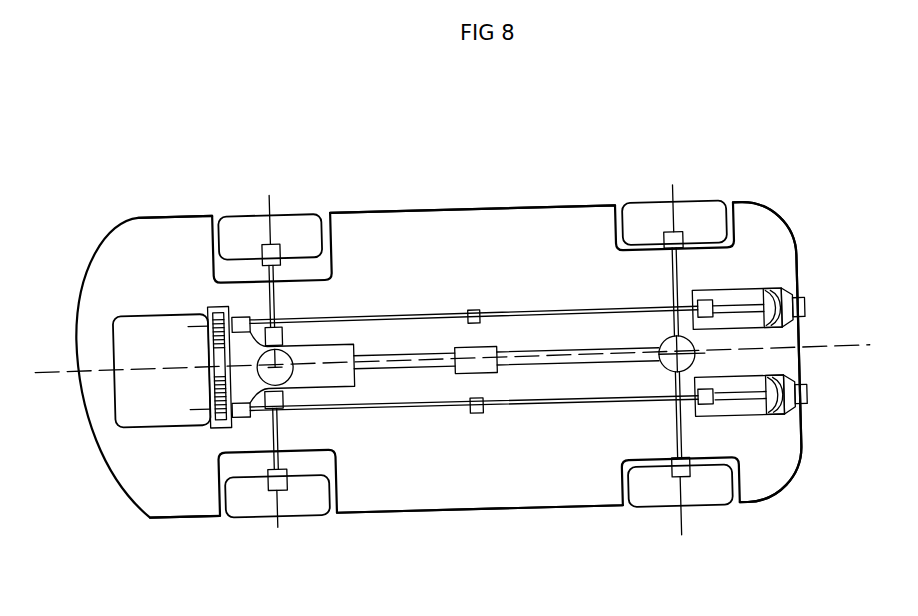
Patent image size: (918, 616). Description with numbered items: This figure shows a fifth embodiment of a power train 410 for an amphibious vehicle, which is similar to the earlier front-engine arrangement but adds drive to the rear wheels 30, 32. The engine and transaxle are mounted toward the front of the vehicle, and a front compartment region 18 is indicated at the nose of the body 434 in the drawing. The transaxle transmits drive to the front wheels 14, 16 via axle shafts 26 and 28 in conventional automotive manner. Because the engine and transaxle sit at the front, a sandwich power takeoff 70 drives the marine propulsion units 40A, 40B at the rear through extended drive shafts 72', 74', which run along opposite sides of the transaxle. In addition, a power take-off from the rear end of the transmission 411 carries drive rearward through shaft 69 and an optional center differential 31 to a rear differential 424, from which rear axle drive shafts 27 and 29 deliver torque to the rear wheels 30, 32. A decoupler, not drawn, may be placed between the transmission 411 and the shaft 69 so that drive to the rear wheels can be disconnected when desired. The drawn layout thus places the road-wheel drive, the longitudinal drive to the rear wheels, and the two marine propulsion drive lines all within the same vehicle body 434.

The power train 410 is at (180, 290).
The vehicle body 434 is at (492, 269).
The front compartment 18 is at (188, 390).
The front wheel 14 is at (312, 224).
The front wheel 16 is at (248, 505).
The rear wheel 30 is at (712, 227).
The rear wheel 32 is at (700, 495).
The axle shaft 28 is at (266, 260).
The axle shaft 26 is at (276, 448).
The rear axle drive shaft 29 is at (682, 283).
The rear axle drive shaft 27 is at (681, 433).
The transmission 411 is at (340, 349).
The sandwich power takeoff 70 is at (206, 424).
The extended drive shaft 72' is at (470, 245).
The extended drive shaft 74' is at (475, 492).
The marine propulsion unit 40A is at (772, 291).
The marine propulsion unit 40B is at (774, 423).
The shaft 69 is at (562, 355).
The center differential 31 is at (490, 364).
The rear differential 424 is at (693, 354).